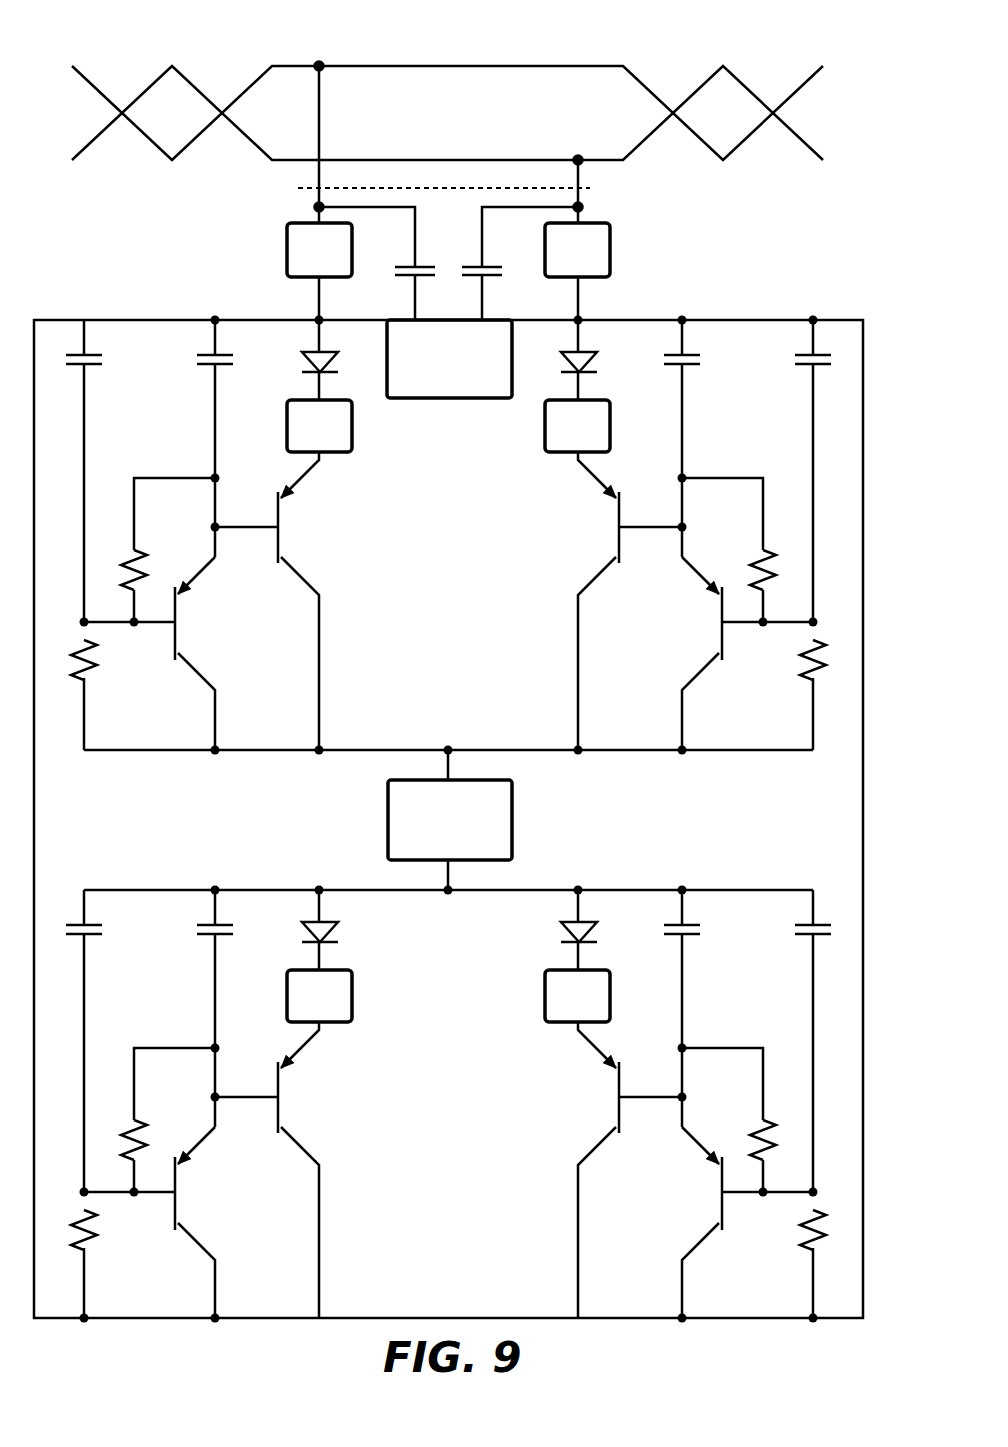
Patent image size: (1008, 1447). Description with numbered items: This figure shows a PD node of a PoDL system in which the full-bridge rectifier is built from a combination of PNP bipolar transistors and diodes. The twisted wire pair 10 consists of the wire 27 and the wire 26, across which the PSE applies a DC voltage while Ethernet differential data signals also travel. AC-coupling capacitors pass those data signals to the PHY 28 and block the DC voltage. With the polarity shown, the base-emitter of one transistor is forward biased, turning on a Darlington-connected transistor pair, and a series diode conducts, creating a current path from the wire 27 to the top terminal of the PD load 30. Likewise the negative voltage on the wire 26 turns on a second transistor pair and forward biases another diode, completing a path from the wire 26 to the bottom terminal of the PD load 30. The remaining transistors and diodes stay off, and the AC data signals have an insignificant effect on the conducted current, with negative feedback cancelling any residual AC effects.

The twisted wire pair 10 is at (275, 36).
The wire 27 is at (82, 72).
The wire 26 is at (82, 153).
The PHY 28 is at (425, 398).
The PD load 30 is at (388, 812).